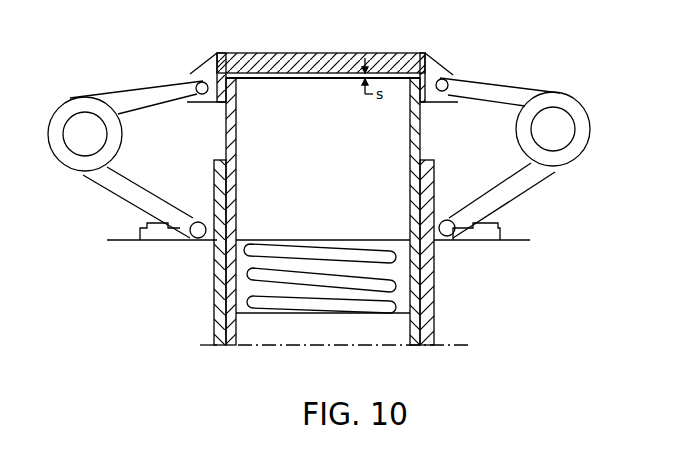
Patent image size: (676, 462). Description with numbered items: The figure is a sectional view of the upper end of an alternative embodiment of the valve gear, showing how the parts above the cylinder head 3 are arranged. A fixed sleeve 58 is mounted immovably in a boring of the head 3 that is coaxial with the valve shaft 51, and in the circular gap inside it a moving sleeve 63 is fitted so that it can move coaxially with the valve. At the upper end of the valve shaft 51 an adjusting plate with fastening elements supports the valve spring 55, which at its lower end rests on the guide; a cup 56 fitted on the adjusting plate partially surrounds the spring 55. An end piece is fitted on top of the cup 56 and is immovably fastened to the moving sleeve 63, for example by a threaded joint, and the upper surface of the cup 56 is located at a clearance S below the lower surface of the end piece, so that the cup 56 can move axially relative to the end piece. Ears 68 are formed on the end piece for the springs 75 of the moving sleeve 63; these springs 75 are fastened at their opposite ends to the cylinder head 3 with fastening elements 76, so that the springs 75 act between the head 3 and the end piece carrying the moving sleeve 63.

The cylinder head 3 is at (523, 287).
The valve shaft 51 is at (258, 300).
The valve spring 55 is at (257, 280).
The cup 56 is at (247, 143).
The fixed sleeve 58 is at (435, 277).
The moving sleeve 63 is at (413, 327).
The ears 68 is at (206, 68).
The springs 75 is at (72, 107).
The fastening elements 76 is at (140, 233).